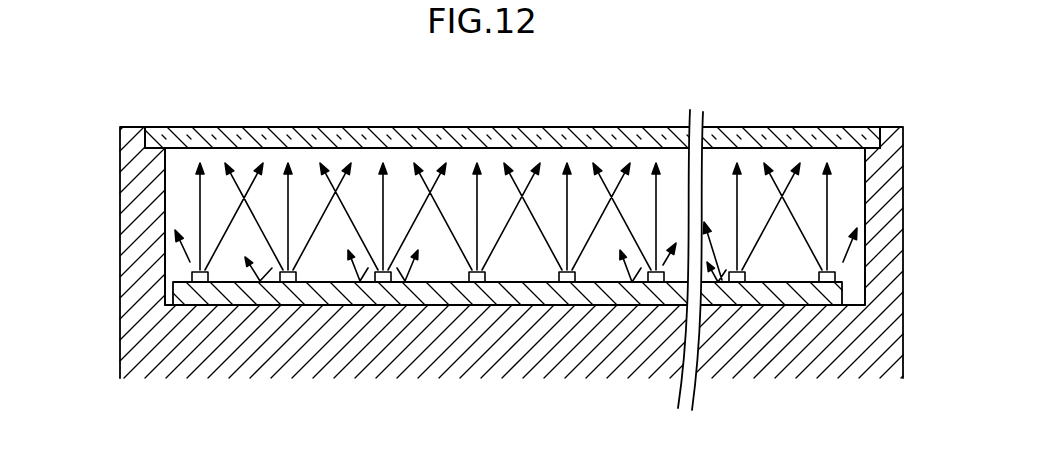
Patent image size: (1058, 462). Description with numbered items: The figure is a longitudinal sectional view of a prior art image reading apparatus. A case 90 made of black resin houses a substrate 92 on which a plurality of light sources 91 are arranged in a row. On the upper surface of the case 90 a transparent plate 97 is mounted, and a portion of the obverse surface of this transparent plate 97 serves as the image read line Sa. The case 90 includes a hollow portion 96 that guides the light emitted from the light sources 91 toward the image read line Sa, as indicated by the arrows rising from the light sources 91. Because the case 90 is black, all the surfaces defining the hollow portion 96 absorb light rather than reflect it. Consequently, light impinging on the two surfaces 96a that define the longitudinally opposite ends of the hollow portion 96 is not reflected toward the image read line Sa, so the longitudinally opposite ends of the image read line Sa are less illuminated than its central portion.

The case 90 is at (845, 360).
The light sources 91 is at (817, 276).
The substrate 92 is at (565, 300).
The hollow portion 96 is at (465, 160).
The surfaces defining longitudinally opposite ends of the hollow portion 96a is at (163, 203).
The transparent plate 97 is at (745, 143).
The image read line Sa is at (487, 127).